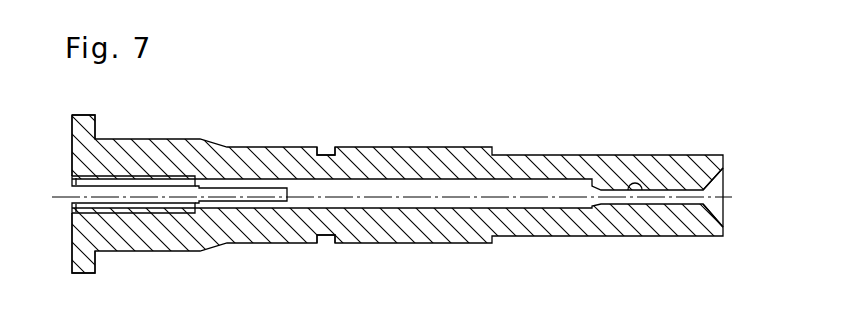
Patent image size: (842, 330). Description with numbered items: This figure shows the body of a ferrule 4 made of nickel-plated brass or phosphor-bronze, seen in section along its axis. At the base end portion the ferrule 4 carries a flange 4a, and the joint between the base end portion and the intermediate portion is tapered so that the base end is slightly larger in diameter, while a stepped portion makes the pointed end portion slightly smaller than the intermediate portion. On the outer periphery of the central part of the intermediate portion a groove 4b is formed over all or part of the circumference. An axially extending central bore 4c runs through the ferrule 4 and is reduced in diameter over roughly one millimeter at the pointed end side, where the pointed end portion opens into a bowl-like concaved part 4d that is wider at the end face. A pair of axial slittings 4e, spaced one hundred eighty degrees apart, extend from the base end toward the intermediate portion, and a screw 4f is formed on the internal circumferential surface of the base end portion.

The ferrule 4 is at (480, 146).
The flange 4a is at (84, 143).
The groove 4b is at (327, 148).
The central bore 4c is at (634, 187).
The bowl-like concaved part 4d is at (717, 183).
The slitting 4e is at (218, 198).
The screw 4f is at (133, 177).